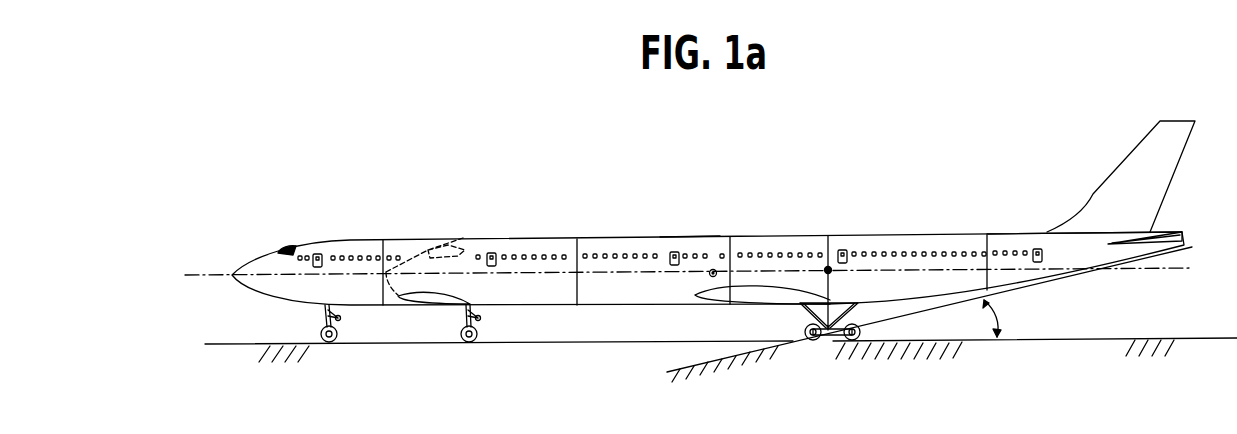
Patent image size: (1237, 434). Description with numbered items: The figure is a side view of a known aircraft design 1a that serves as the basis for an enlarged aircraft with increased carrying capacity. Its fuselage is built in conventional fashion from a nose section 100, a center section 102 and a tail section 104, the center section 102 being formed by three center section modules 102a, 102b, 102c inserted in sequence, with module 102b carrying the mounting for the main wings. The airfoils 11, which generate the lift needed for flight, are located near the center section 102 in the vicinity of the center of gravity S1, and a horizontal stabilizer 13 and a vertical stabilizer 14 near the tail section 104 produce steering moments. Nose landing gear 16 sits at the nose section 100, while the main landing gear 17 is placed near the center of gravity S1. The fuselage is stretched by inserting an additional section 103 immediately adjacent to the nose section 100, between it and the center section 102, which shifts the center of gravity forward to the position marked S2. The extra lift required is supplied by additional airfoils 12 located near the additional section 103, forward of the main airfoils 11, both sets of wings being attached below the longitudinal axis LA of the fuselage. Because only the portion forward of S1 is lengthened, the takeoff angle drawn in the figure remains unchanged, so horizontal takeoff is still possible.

The nose section 100 is at (430, 252).
The center section 102 is at (657, 234).
The center section module 102a is at (612, 236).
The center section module 102b is at (785, 235).
The center section module 102c is at (938, 236).
The additional section 103 is at (460, 240).
The tail section 104 is at (1034, 233).
The aircraft design 1a is at (686, 236).
The center of gravity S1 is at (830, 268).
The center of gravity S2 is at (716, 270).
The longitudinal axis LA is at (220, 267).
The airfoils 11 is at (745, 308).
The additional airfoils 12 is at (434, 311).
The horizontal stabilizer 13 is at (1172, 229).
The vertical stabilizer 14 is at (1173, 120).
The nose landing gear 16 is at (404, 238).
The main landing gear 17 is at (808, 305).